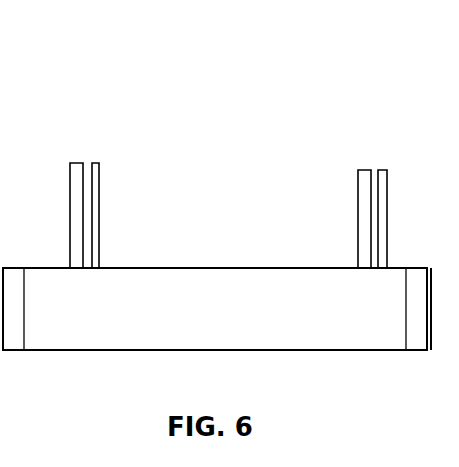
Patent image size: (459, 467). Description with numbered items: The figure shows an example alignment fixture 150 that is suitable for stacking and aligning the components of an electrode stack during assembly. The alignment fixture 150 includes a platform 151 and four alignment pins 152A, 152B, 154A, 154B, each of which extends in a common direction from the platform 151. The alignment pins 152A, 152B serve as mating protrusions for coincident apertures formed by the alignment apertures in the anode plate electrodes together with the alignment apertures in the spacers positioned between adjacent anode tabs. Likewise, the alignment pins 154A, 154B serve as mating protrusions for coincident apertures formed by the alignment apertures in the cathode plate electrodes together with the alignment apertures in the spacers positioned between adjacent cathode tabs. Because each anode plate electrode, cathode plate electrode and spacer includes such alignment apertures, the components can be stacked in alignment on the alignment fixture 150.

The alignment fixture 150 is at (259, 98).
The platform 151 is at (228, 318).
The alignment pin 152A is at (74, 182).
The alignment pin 152B is at (94, 181).
The alignment pin 154A is at (364, 183).
The alignment pin 154B is at (384, 245).